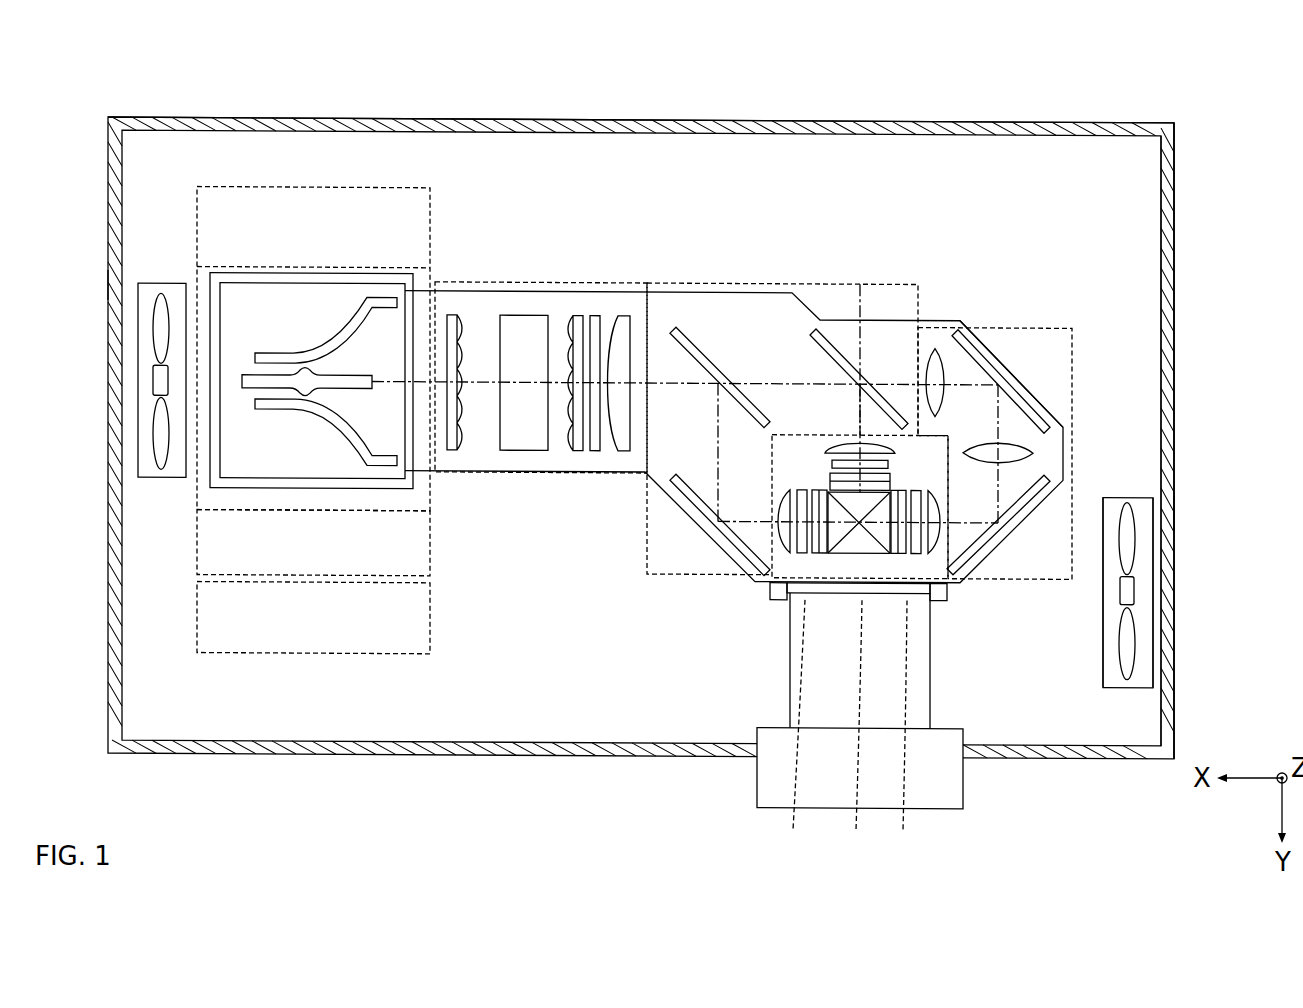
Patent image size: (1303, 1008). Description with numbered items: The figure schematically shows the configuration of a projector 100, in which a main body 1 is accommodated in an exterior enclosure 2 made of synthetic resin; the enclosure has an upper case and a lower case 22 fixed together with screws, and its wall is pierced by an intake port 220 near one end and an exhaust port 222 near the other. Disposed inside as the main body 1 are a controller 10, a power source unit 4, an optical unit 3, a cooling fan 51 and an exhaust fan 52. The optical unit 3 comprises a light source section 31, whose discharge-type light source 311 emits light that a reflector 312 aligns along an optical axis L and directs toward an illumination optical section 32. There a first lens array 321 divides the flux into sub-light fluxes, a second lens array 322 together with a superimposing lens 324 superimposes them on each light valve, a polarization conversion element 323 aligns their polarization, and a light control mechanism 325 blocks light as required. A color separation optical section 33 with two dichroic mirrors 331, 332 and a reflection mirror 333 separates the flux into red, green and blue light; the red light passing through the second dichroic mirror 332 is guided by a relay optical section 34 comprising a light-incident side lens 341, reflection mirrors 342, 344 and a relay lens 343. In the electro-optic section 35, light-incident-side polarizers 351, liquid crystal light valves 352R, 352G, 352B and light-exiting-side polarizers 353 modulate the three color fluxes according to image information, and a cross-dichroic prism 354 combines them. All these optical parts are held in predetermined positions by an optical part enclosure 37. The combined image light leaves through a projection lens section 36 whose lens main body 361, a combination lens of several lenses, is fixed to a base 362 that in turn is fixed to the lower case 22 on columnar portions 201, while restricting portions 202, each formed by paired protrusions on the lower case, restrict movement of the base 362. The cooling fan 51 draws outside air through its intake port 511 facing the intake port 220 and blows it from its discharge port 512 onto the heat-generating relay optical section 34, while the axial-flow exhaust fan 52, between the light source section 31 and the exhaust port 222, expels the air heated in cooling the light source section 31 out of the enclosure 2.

The projector 100 is at (1025, 103).
The main body 1 is at (998, 275).
The exterior enclosure 2 is at (885, 117).
The lower case 22 is at (1176, 219).
The intake port 220 is at (1175, 506).
The exhaust port 222 is at (108, 285).
The optical unit 3 is at (583, 635).
The power source unit 4 is at (197, 535).
The controller 10 is at (197, 650).
The light source section 31 is at (405, 265).
The light source 311 is at (342, 377).
The reflector 312 is at (300, 342).
The optical axis L is at (483, 378).
The illumination optical section 32 is at (600, 277).
The first lens array 321 is at (455, 450).
The second lens array 322 is at (575, 449).
The polarization conversion element 323 is at (595, 449).
The superimposing lens 324 is at (620, 449).
The light control mechanism 325 is at (525, 321).
The color separation optical section 33 is at (765, 276).
The dichroic mirror 331 is at (700, 347).
The dichroic mirror 332 is at (832, 345).
The reflection mirror 333 is at (703, 507).
The optical part enclosure 37 is at (848, 279).
The relay optical section 34 is at (1073, 435).
The light-incident side lens 341 is at (938, 352).
The reflection mirror 342 is at (1027, 398).
The relay lens 343 is at (988, 447).
The reflection mirror 344 is at (1018, 513).
The electro-optic section 35 is at (853, 588).
The light-incident-side polarizer 351 is at (835, 458).
The liquid crystal light valve for G light 352G is at (840, 436).
The liquid crystal light valve for B light 352B is at (784, 552).
The liquid crystal light valve for R light 352R is at (936, 552).
The light-exiting-side polarizer 353 is at (830, 476).
The cross-dichroic prism 354 is at (850, 561).
The columnar portion 201 is at (782, 596).
The restricting portion 202 is at (847, 734).
The projection lens section 36 is at (755, 726).
The lens main body 361 is at (932, 692).
The base 362 is at (848, 728).
The cooling fan 51 is at (1127, 684).
The intake port 511 is at (1154, 659).
The discharge port 512 is at (1103, 660).
The exhaust fan 52 is at (163, 283).